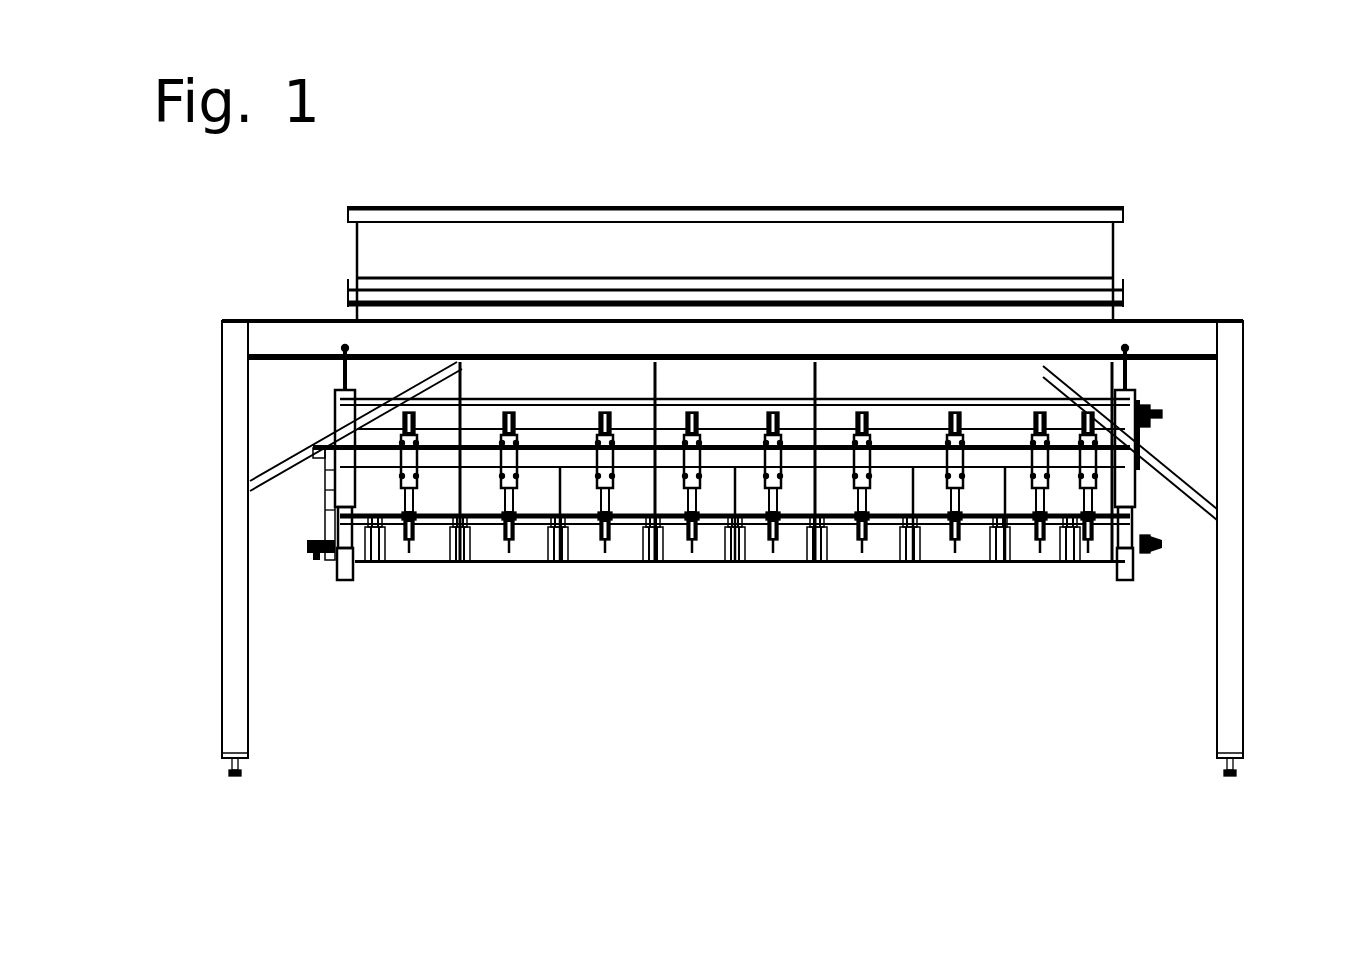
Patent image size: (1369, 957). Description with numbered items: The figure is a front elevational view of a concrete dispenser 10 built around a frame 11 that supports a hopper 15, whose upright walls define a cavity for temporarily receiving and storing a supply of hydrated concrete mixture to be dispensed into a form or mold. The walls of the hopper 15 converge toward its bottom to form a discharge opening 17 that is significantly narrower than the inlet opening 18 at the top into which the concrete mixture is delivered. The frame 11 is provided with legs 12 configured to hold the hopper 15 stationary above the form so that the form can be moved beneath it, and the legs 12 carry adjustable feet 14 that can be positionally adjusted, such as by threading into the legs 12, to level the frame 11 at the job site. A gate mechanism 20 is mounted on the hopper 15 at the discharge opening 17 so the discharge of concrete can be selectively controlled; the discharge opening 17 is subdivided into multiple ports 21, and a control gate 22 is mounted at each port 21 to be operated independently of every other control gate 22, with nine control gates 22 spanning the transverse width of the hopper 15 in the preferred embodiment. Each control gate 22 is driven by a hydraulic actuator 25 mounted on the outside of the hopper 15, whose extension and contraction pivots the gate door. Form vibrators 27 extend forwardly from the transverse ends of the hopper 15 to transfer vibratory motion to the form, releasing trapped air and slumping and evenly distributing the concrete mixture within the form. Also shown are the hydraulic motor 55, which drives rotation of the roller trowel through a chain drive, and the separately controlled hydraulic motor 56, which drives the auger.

The concrete dispenser 10 is at (1075, 150).
The frame 11 is at (295, 335).
The legs 12 is at (230, 685).
The adjustable feet 14 is at (243, 773).
The hopper 15 is at (1115, 233).
The discharge opening 17 is at (865, 590).
The inlet opening 18 is at (648, 197).
The gate mechanism 20 is at (622, 606).
The ports 21 is at (1083, 569).
The control gate 22 is at (847, 548).
The hydraulic actuator 25 is at (700, 455).
The form vibrators 27 is at (333, 570).
The hydraulic motor 55 is at (1137, 457).
The hydraulic motor 56 is at (1136, 398).